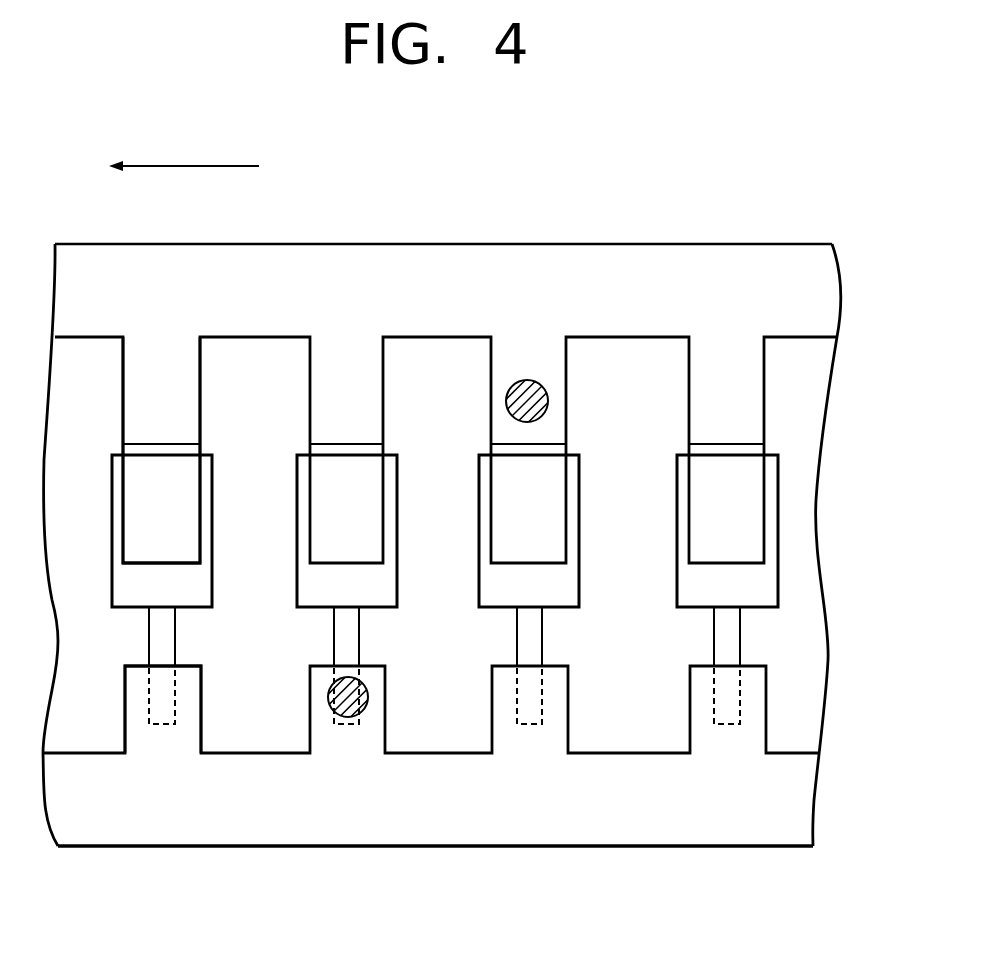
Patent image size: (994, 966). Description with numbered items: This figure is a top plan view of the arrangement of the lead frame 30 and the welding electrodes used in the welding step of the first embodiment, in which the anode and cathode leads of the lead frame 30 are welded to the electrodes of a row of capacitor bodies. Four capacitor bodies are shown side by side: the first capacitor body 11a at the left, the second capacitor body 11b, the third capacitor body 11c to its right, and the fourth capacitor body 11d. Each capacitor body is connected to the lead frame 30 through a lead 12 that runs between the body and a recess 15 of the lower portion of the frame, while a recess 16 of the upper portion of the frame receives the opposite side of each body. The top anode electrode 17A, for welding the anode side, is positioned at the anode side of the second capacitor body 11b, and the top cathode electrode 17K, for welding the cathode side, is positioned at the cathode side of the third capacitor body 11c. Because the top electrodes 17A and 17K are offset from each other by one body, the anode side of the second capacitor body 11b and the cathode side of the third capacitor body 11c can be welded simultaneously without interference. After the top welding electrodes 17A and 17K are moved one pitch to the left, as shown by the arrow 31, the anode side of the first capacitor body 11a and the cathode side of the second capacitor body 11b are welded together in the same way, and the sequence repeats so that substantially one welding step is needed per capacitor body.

The first capacitor body 11a is at (186, 586).
The second capacitor body 11b is at (371, 586).
The third capacitor body 11c is at (566, 586).
The fourth capacitor body 11d is at (758, 592).
The lead 12 is at (162, 628).
The recess 15 is at (131, 724).
The recess 16 is at (148, 457).
The top cathode electrode 17K is at (538, 381).
The top anode electrode 17A is at (327, 712).
The lead frame 30 is at (523, 855).
The arrow 31 is at (207, 168).